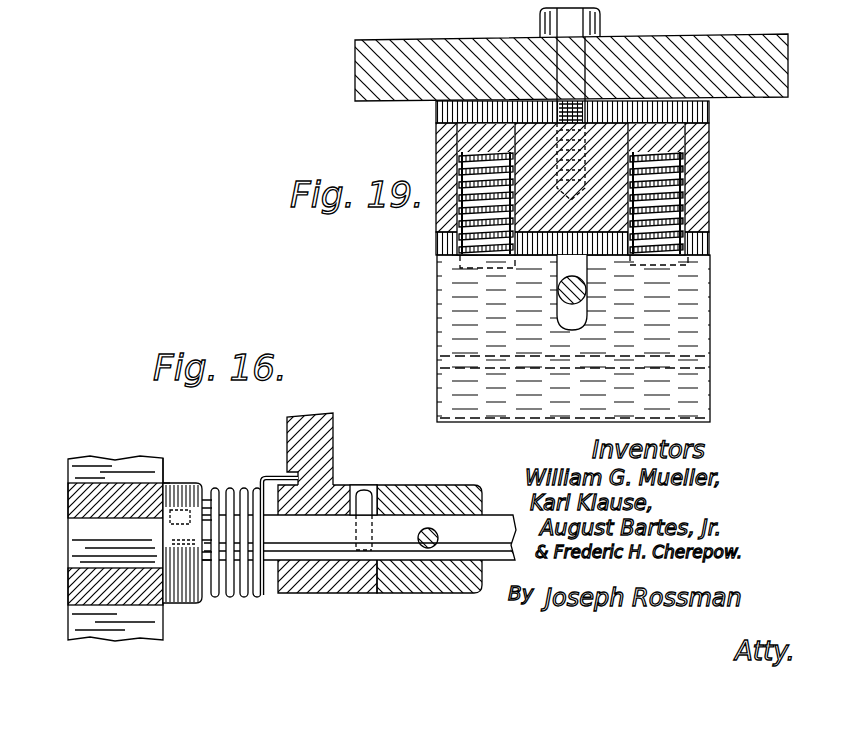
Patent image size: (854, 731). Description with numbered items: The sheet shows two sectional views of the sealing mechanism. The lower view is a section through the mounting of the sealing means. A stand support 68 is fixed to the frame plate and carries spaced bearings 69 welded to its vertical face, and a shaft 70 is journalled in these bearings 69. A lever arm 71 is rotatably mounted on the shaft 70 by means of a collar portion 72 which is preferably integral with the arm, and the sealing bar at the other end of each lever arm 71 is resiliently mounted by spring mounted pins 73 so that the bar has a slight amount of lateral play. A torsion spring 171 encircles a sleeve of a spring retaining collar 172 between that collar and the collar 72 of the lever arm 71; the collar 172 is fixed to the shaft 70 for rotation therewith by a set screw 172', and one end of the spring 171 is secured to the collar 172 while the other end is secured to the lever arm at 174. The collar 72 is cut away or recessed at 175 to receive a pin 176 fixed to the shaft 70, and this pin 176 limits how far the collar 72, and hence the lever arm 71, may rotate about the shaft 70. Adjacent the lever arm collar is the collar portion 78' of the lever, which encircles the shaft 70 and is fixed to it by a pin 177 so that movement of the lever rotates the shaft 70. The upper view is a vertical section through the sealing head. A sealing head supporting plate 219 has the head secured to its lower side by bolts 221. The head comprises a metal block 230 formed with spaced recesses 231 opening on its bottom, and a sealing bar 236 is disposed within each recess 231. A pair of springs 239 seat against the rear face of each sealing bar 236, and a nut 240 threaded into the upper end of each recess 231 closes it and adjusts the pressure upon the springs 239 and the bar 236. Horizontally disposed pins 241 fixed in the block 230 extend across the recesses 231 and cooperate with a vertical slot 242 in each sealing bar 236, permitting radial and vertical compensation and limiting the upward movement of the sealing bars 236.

In FIG. 19, the sealing head supporting plate 219 is at (738, 84).
In FIG. 19, the bolts 221 is at (603, 26).
In FIG. 19, the nut 240 is at (712, 138).
In FIG. 19, the metal block 230 is at (693, 206).
In FIG. 19, the springs 239 is at (437, 237).
In FIG. 19, the recesses 231 is at (688, 184).
In FIG. 19, the sealing bars 236 is at (695, 316).
In FIG. 19, the vertical slot 242 is at (573, 318).
In FIG. 19, the pins 241 is at (560, 289).
In FIG. 16, the bearings 69 is at (75, 510).
In FIG. 16, the stand support 68 is at (177, 464).
In FIG. 16, the collar portions 72 is at (300, 594).
In FIG. 16, the lever arms 71 is at (325, 441).
In FIG. 16, the collar portion 78' is at (429, 564).
In FIG. 16, the shaft 70 is at (455, 522).
In FIG. 16, the recess 175 is at (355, 492).
In FIG. 16, the pin 176 is at (378, 489).
In FIG. 16, the pin 177 is at (437, 538).
In FIG. 16, the torsion spring 171 is at (240, 600).
In FIG. 16, the spring end attachment 174 is at (280, 470).
In FIG. 16, the spring retaining collar 172 is at (187, 577).
In FIG. 16, the spring mounted pins 73 is at (174, 549).
In FIG. 16, the set screw 172' is at (191, 468).